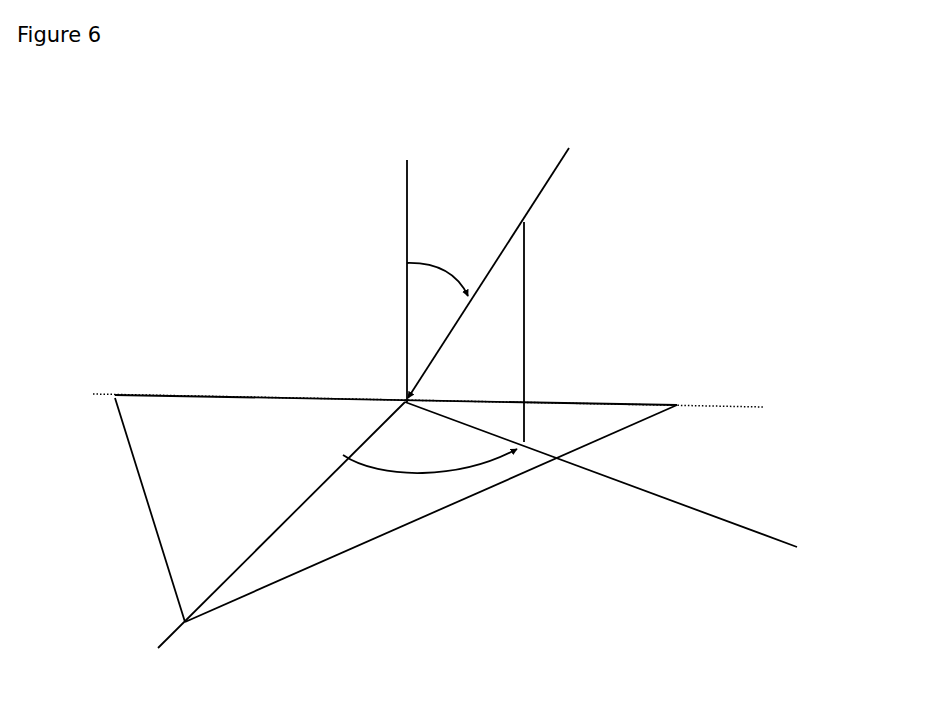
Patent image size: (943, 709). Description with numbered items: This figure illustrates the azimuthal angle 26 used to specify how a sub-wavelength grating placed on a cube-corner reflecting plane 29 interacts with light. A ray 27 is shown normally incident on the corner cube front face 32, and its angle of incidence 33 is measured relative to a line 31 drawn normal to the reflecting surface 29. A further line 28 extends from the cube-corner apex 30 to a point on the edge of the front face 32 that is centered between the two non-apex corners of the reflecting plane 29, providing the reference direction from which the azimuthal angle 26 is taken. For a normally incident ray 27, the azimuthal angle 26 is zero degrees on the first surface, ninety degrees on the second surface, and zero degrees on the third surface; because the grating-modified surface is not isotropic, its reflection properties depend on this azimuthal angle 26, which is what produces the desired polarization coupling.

The azimuthal angle 26 is at (430, 455).
The ray 27 is at (618, 491).
The line 28 is at (267, 542).
The reflecting plane 29 is at (167, 510).
The cube-corner apex 30 is at (199, 626).
The line normal to the reflecting surface 31 is at (405, 264).
The corner cube front face 32 is at (452, 404).
The angle of incidence 33 is at (437, 265).